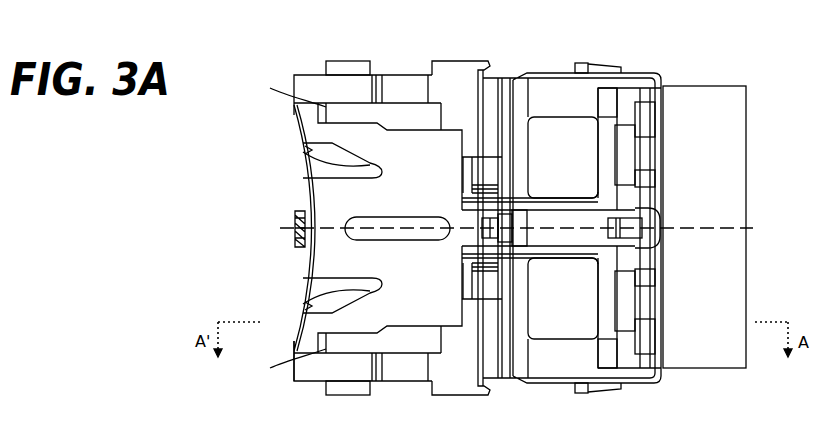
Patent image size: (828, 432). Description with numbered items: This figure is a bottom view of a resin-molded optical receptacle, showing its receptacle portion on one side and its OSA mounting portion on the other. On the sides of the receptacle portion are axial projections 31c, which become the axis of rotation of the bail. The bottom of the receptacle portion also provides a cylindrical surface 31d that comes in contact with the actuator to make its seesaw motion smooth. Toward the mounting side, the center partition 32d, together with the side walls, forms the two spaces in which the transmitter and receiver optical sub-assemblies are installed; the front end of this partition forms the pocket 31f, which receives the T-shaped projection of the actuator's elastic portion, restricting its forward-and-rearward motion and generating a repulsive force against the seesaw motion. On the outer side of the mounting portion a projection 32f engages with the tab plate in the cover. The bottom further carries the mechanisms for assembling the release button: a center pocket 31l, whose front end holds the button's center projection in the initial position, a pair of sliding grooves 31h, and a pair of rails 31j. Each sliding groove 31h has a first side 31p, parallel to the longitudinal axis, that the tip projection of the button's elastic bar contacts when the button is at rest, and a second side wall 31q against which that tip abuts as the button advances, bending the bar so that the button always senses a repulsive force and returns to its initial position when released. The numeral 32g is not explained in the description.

The axial projection 31c is at (352, 62).
The cylindrical surface 31d is at (460, 77).
The projection 32f is at (593, 63).
The first side 31p is at (310, 150).
The second side wall 31q is at (315, 162).
The sliding groove 31h is at (372, 166).
The center partition 32d is at (565, 215).
The contact terminal 32g is at (636, 226).
The center pocket 31l is at (410, 233).
The pocket 31f is at (493, 228).
The rail 31j is at (328, 348).